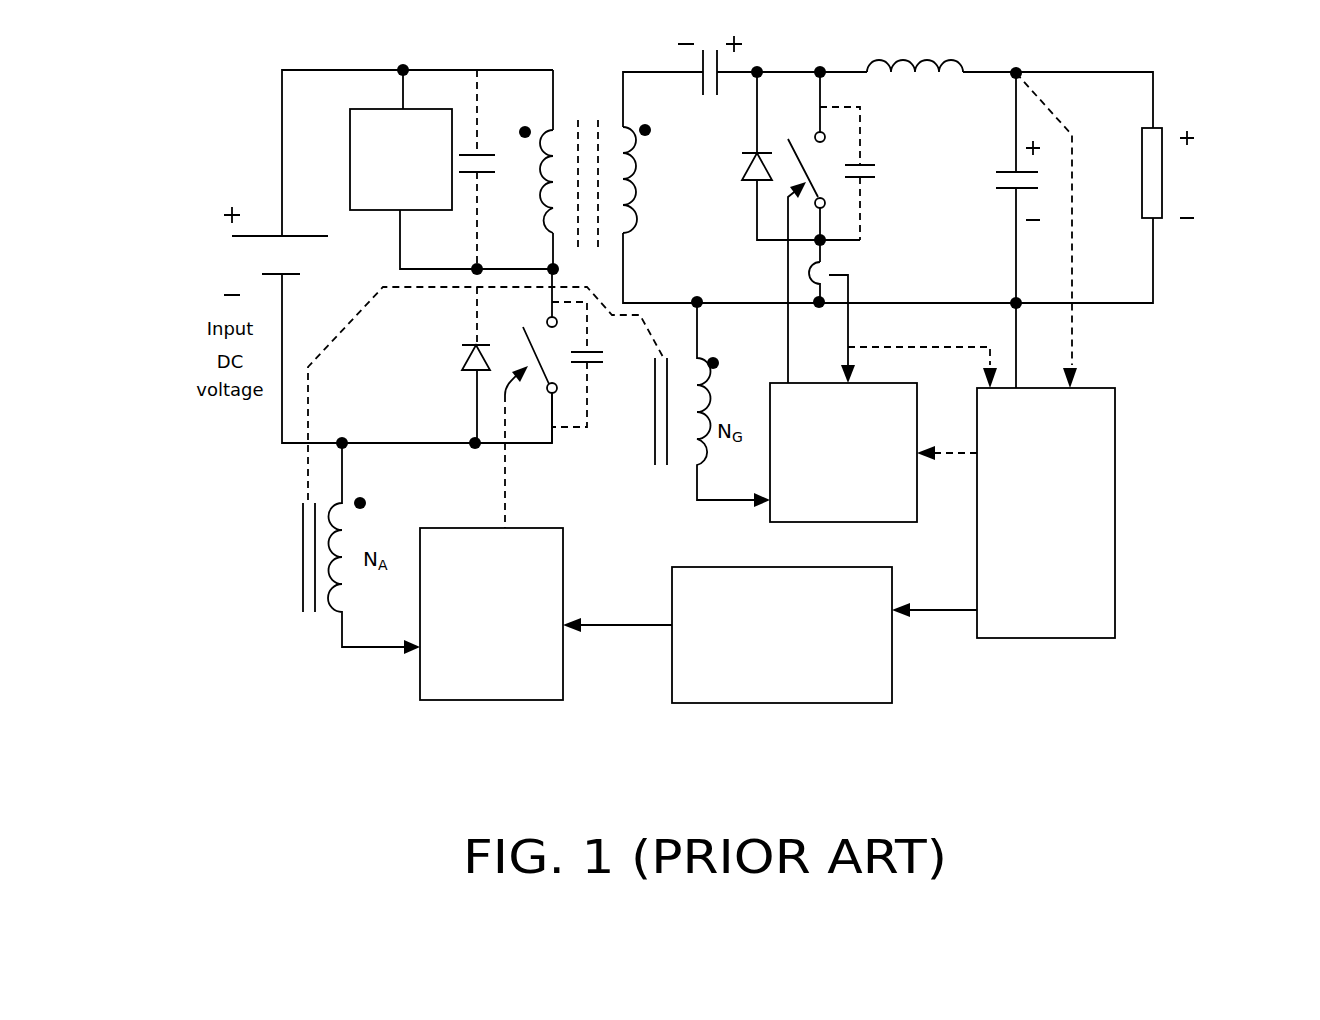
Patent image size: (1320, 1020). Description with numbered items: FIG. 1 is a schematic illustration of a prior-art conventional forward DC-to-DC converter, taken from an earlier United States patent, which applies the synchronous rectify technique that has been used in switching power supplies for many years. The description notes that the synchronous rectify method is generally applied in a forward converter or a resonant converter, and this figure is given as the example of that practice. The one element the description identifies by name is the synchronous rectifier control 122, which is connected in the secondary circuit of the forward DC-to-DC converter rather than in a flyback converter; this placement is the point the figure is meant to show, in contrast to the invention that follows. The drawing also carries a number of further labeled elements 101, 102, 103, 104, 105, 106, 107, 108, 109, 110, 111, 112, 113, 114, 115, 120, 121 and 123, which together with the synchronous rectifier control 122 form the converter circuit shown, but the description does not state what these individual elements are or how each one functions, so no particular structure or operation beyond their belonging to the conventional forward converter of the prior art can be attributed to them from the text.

The DC input power source 101 is at (270, 236).
The voltage clamp circuit 102 is at (426, 109).
The diode 103 is at (462, 358).
The main switching element 104 is at (556, 428).
The transformer 105 is at (600, 117).
The capacitor 106 is at (475, 175).
The capacitor 107 is at (588, 364).
The capacitor 108 is at (728, 62).
The diode 109 is at (742, 172).
The synchronous rectifier switching element 110 is at (826, 170).
The capacitor 111 is at (867, 180).
The inductor 112 is at (963, 56).
The output capacitor 113 is at (998, 190).
The load 114 is at (1163, 218).
The current detector 115 is at (808, 278).
The primary control circuit 120 is at (504, 700).
The insulation transmission means 121 is at (768, 703).
The synchronous rectifier control 122 is at (918, 498).
The secondary control circuit 123 is at (1050, 638).